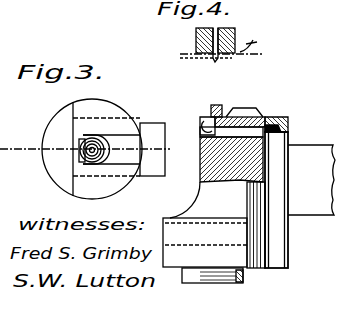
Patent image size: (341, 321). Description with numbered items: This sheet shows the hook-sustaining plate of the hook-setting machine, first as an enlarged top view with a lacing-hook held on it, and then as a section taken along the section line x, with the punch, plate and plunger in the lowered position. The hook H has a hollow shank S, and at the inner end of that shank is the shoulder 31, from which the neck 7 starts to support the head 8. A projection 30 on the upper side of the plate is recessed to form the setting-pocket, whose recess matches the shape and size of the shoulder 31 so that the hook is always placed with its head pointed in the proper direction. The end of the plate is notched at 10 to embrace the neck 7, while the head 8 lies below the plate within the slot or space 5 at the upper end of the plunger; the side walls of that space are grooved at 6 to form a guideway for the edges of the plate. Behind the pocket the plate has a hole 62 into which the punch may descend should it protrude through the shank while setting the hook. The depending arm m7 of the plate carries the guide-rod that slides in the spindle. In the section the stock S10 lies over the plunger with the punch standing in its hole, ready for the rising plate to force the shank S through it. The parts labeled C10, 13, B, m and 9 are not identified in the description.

In FIG. 3, the section line x is at (42, 149).
In FIG. 3, the notch 10 is at (79, 151).
In FIG. 3, the neck 7 is at (79, 154).
In FIG. 4, the neck 7 is at (200, 125).
In FIG. 3, the projection 30 is at (102, 136).
In FIG. 4, the projection 30 is at (264, 117).
In FIG. 3, the shoulder 31 is at (103, 151).
In FIG. 4, the shoulder 31 is at (229, 114).
In FIG. 3, the head 8 is at (143, 116).
In FIG. 4, the head 8 is at (268, 113).
In FIG. 4, the stock S10 is at (235, 45).
In FIG. 4, the cutter slot C10 is at (216, 60).
In FIG. 4, the hollow shank S is at (249, 86).
In FIG. 4, the pin 13 is at (196, 78).
In FIG. 4, the hook H is at (214, 105).
In FIG. 4, the hole 62 is at (211, 112).
In FIG. 4, the slot or space 5 is at (206, 133).
In FIG. 4, the block B is at (203, 148).
In FIG. 4, the grooves 6 is at (226, 154).
In FIG. 4, the frame member m is at (200, 173).
In FIG. 4, the frame box 9 is at (312, 149).
In FIG. 4, the depending arm m7 is at (288, 246).